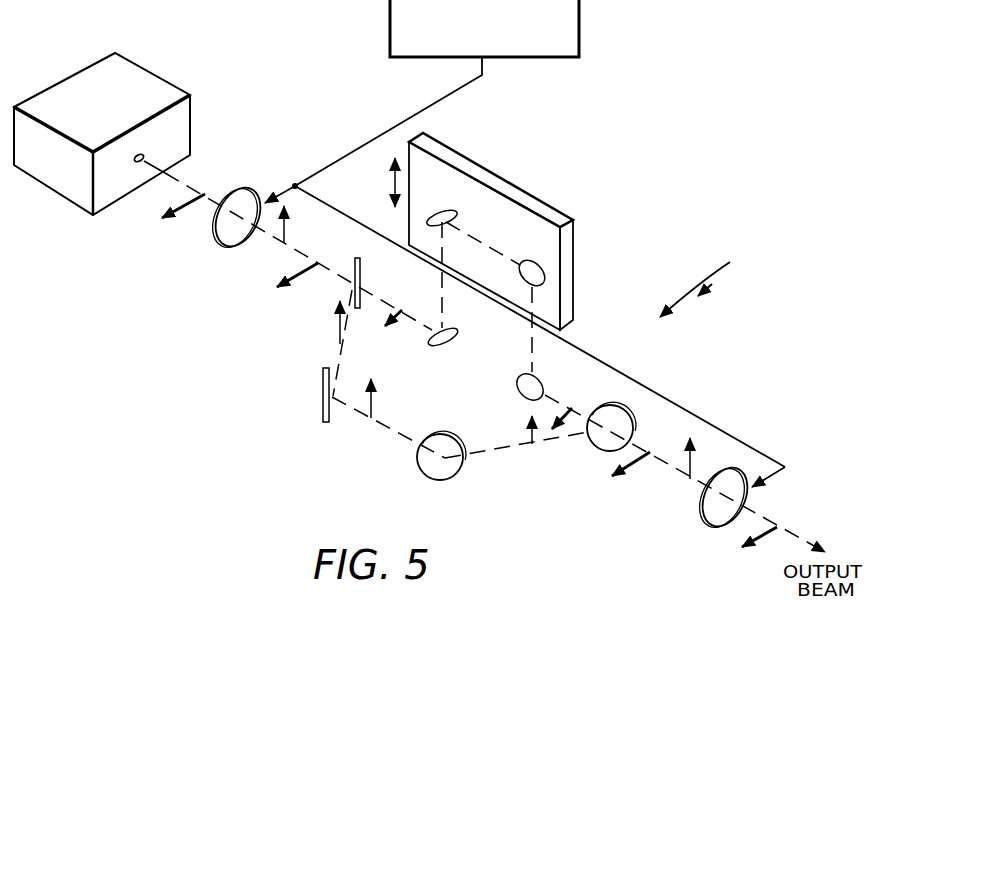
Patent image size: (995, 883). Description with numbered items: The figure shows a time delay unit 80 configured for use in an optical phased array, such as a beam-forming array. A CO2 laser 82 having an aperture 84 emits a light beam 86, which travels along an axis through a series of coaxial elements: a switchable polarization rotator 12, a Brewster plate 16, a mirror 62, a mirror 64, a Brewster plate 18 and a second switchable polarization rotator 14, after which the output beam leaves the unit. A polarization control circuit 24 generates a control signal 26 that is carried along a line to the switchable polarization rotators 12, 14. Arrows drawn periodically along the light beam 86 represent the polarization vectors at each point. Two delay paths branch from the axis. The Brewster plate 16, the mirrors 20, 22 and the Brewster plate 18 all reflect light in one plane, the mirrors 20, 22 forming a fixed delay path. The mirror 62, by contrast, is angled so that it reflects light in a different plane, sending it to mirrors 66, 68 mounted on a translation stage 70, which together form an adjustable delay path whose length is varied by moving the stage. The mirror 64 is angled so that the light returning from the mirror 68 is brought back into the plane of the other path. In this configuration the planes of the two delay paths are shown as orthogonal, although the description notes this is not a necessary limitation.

The switchable polarization rotator 12 is at (230, 246).
The switchable polarization rotator 14 is at (715, 528).
The Brewster plate 16 is at (357, 308).
The Brewster plate 18 is at (633, 428).
The mirror 20 is at (322, 421).
The mirror 22 is at (430, 482).
The polarization control circuit 24 is at (579, 42).
The control signal 26 is at (448, 95).
The mirror 62 is at (447, 345).
The mirror 64 is at (522, 398).
The mirror 66 is at (452, 214).
The mirror 68 is at (532, 262).
The translation stage 70 is at (565, 280).
The time delay unit 80 is at (706, 279).
The CO2 laser 82 is at (180, 122).
The aperture 84 is at (136, 161).
The light beam 86 is at (180, 181).